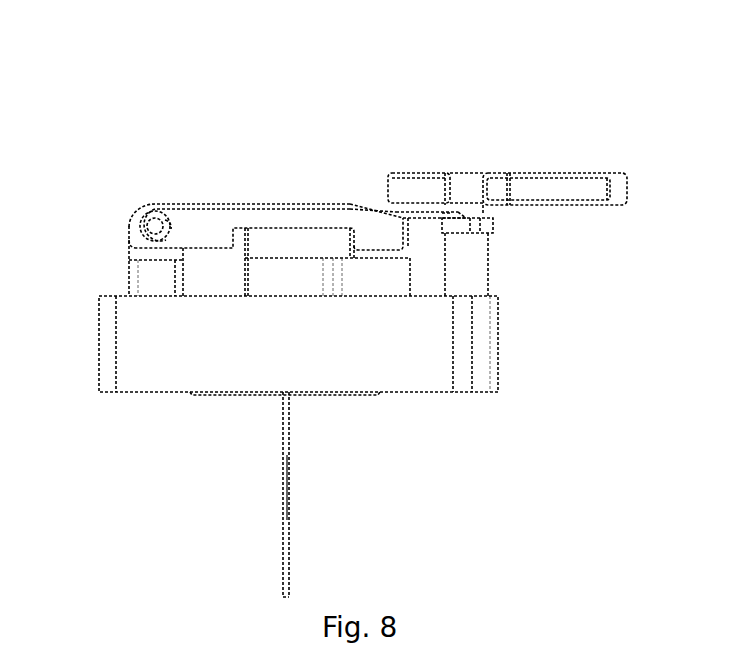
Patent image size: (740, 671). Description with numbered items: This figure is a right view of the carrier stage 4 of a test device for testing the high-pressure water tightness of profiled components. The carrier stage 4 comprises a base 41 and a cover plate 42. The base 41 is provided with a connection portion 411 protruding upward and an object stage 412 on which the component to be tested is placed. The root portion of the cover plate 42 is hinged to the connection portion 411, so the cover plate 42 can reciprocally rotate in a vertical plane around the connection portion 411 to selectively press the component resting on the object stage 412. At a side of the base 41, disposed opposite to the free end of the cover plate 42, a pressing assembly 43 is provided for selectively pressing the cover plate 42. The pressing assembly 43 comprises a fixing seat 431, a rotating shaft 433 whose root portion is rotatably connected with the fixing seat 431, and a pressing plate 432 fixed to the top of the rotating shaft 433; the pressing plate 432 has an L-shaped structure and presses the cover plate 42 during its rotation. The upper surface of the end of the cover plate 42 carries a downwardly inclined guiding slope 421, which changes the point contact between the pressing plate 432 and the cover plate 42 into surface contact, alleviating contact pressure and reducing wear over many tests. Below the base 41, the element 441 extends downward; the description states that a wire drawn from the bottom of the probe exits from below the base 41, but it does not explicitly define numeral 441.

The carrier stage 4 is at (232, 87).
The base 41 is at (106, 352).
The connection portion 411 is at (131, 278).
The object stage 412 is at (302, 283).
The cover plate 42 is at (234, 208).
The guiding slope 421 is at (370, 203).
The pressing assembly 43 is at (549, 124).
The fixing seat 431 is at (492, 375).
The pressing plate 432 is at (622, 200).
The rotating shaft 433 is at (482, 255).
The shaft 441 is at (290, 448).